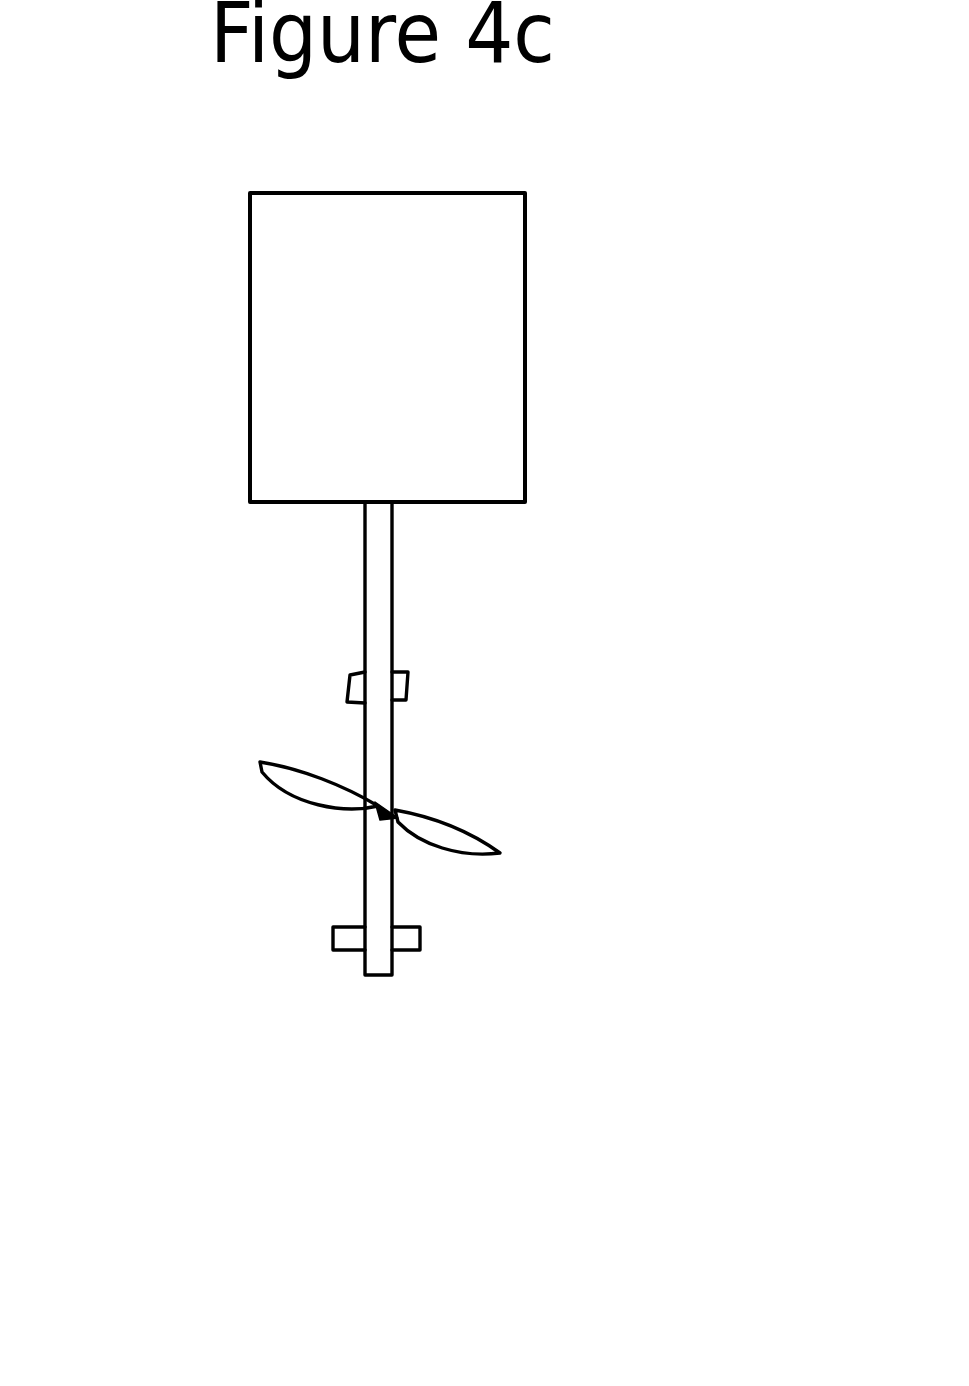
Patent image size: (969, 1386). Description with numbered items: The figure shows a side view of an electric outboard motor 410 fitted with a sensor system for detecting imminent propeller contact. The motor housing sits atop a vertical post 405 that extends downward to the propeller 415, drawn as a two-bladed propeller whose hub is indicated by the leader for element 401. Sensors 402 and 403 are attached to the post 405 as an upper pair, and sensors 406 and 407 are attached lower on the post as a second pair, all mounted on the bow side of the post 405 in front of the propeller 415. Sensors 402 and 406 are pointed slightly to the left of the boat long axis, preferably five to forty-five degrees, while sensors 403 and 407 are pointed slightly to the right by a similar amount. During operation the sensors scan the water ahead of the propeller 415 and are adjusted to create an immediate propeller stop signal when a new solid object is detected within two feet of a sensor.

The electric outboard motor 410 is at (525, 342).
The vertical post 405 is at (413, 590).
The sensor 403 is at (330, 683).
The sensor 402 is at (422, 688).
The propeller 401 is at (545, 892).
The propeller 415 is at (522, 868).
The sensor 407 is at (310, 938).
The sensor 406 is at (437, 955).